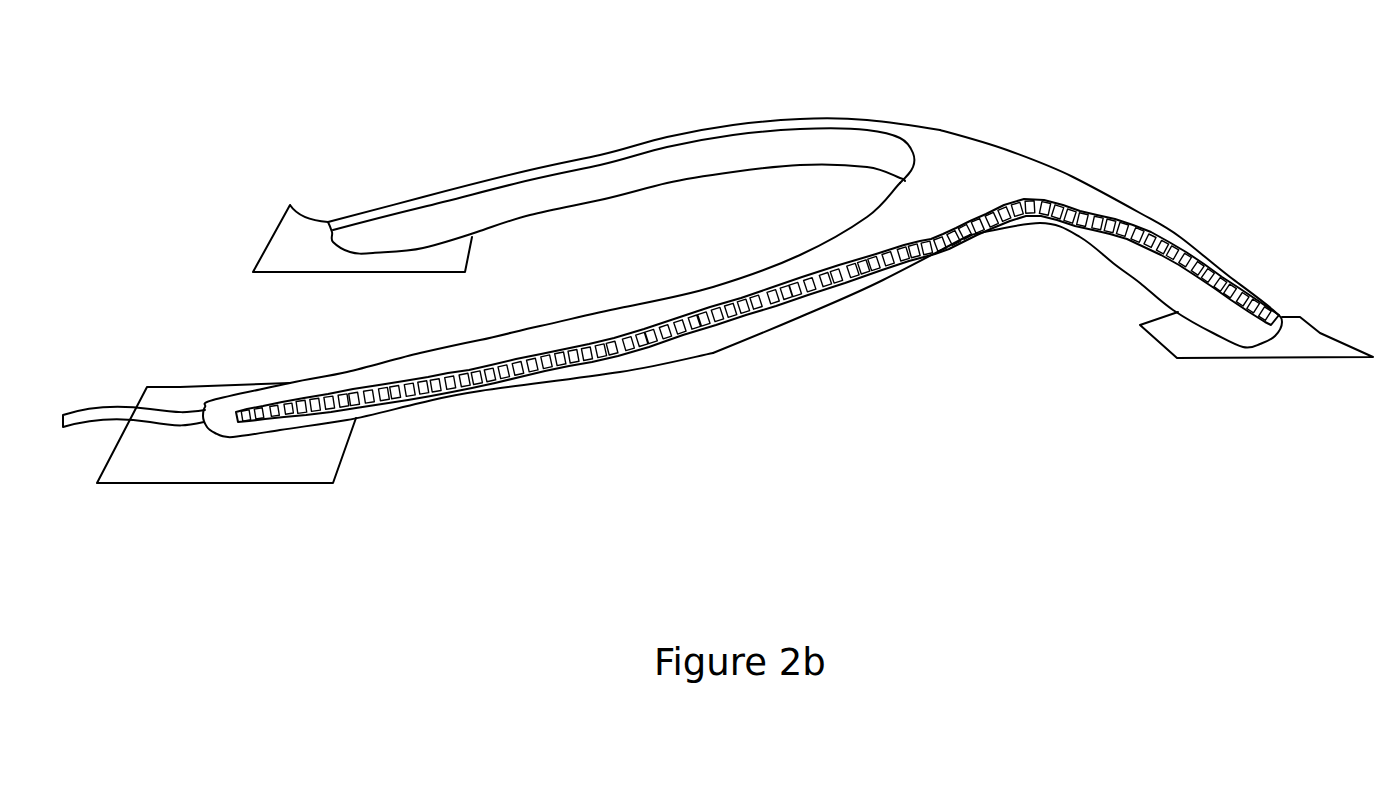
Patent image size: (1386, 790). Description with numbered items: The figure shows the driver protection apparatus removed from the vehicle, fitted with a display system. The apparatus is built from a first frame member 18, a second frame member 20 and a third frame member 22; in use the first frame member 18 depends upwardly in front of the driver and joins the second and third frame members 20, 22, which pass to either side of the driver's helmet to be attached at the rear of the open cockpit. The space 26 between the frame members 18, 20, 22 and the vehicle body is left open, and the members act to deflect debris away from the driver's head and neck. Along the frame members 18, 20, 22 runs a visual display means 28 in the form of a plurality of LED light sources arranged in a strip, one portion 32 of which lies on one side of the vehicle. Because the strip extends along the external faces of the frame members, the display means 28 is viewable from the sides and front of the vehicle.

The first frame member 18 is at (1180, 243).
The second frame member 20 is at (437, 193).
The third frame member 22 is at (399, 407).
The space 26 is at (933, 327).
The visual display means 28 is at (1040, 222).
The portion of the strip 32 is at (968, 240).